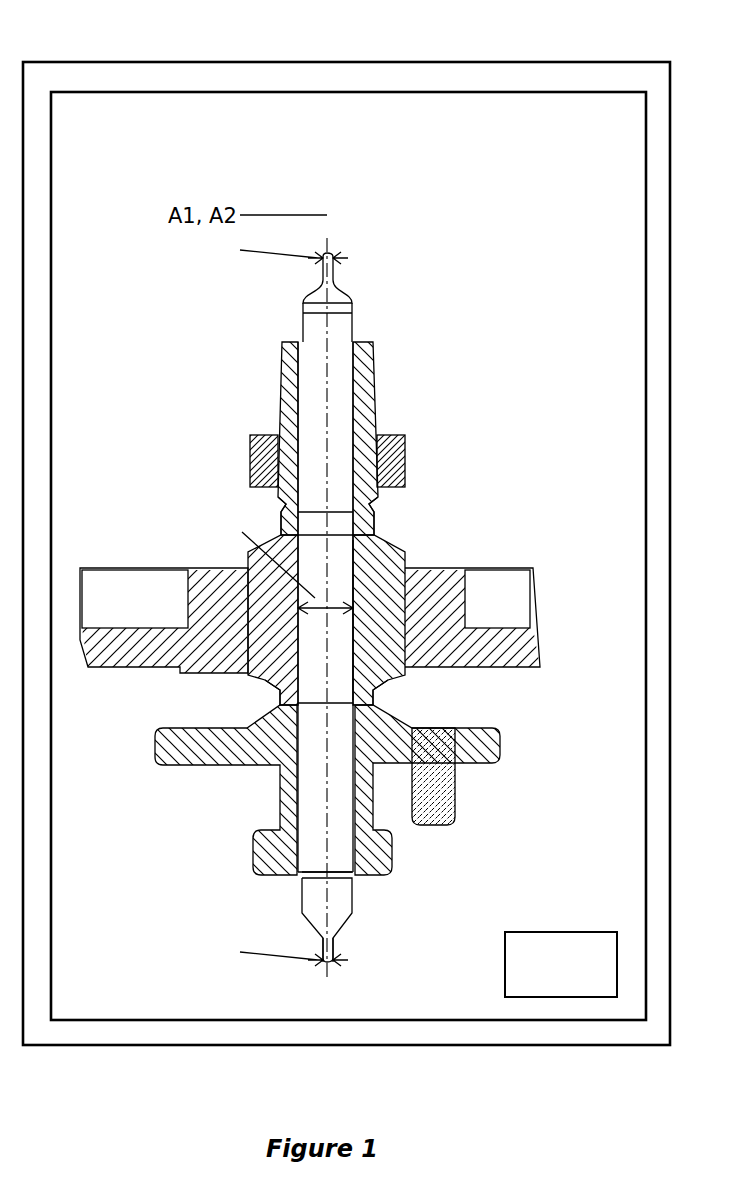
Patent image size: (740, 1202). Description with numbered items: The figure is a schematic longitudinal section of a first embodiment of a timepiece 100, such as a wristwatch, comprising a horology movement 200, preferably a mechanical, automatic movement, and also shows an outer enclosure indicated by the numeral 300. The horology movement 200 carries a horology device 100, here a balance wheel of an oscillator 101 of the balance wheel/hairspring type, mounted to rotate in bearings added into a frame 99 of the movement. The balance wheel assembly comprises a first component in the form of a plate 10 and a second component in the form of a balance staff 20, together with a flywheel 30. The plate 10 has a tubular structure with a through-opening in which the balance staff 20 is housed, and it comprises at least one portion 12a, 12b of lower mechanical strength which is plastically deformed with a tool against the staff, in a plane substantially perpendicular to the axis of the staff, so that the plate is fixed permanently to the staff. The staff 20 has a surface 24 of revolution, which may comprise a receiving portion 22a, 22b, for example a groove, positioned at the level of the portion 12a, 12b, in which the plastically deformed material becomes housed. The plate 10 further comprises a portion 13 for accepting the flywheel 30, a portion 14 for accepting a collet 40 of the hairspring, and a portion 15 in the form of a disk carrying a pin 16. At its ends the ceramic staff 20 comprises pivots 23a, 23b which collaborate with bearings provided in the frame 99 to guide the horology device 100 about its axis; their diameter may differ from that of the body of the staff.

The horology device 100 is at (343, 592).
The oscillator 101 is at (327, 194).
The horology movement 200 is at (426, 91).
The outer enclosure 300 is at (507, 61).
The plate 10 is at (321, 438).
The plastically deformable portion 12a is at (277, 522).
The plastically deformable portion 12b is at (277, 693).
The portion for accepting the flywheel 13 is at (408, 568).
The portion for accepting a collet 14 is at (384, 418).
The disk portion 15 is at (503, 745).
The pin 16 is at (442, 815).
The balance staff 20 is at (333, 590).
The receiving portion 22a is at (356, 522).
The receiving portion 22b is at (357, 693).
The pivot 23a is at (337, 950).
The pivot 23b is at (340, 274).
The surface 24 is at (360, 578).
The flywheel 30 is at (530, 650).
The collet 40 is at (406, 457).
The frame 99 is at (574, 978).